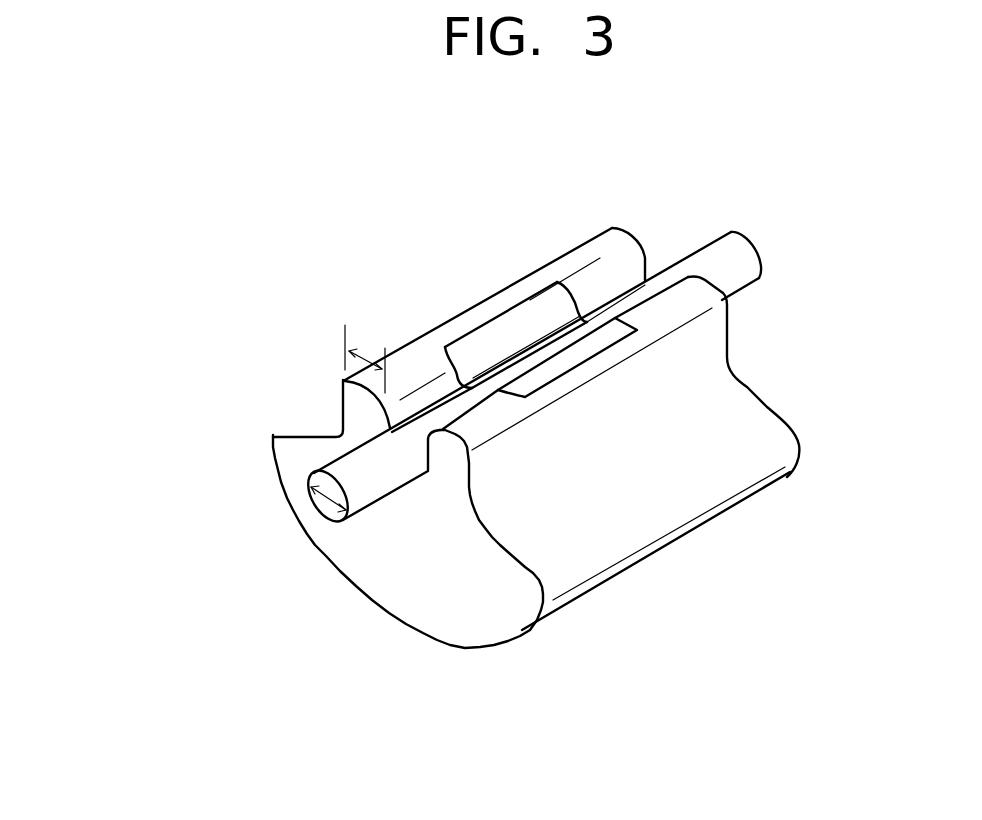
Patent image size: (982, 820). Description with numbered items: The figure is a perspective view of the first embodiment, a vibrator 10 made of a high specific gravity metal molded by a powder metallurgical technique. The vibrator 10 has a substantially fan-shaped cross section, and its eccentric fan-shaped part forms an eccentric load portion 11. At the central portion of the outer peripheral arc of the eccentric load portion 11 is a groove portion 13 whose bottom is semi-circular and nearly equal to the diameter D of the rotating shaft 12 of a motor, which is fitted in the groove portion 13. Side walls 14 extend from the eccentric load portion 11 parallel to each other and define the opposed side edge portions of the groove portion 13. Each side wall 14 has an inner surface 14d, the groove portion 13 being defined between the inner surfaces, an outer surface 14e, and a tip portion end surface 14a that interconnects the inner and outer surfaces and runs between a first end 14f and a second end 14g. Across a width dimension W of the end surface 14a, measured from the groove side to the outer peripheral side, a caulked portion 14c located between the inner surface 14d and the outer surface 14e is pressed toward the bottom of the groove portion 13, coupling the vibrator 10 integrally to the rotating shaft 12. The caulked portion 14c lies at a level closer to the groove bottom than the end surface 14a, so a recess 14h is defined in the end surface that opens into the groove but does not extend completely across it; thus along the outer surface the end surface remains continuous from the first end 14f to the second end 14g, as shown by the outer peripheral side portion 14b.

The vibrator 10 is at (410, 640).
The eccentric load portion 11 is at (627, 530).
The rotating shaft 12 is at (713, 260).
The groove portion 13 is at (428, 470).
The side wall 14 is at (715, 337).
The tip portion end surface 14a is at (590, 262).
The outer peripheral side portion 14b is at (490, 306).
The caulked portion 14c is at (483, 350).
The inner surface 14d is at (322, 474).
The outer surface 14e is at (343, 424).
The first end 14f is at (637, 237).
The second end 14g is at (347, 382).
The recess 14h is at (508, 344).
The width dimension W is at (365, 359).
The diameter D is at (313, 485).